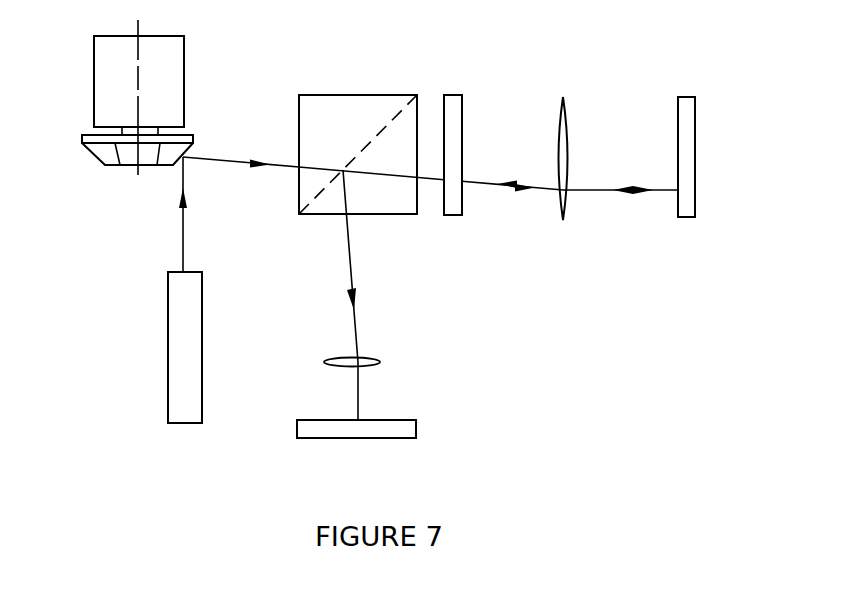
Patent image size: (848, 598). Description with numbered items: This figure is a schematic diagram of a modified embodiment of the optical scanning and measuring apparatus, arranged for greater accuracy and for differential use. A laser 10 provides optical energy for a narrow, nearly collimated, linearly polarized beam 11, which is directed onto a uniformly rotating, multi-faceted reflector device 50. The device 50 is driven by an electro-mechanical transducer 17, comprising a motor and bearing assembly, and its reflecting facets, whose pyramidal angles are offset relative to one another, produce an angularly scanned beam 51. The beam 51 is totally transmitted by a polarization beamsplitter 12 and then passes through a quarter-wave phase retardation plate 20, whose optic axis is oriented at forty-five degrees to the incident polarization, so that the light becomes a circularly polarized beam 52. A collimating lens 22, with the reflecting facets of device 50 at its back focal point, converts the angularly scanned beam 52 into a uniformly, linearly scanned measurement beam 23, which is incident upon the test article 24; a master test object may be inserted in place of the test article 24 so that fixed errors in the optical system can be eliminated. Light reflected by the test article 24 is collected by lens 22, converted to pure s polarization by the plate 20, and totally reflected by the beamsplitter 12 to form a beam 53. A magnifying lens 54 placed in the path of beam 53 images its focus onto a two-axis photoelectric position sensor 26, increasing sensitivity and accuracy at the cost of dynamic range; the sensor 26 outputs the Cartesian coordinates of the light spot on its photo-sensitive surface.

The electro-mechanical transducer 17 is at (94, 78).
The multi-faceted reflector device 50 is at (108, 165).
The laser 10 is at (204, 330).
The linearly polarized beam 11 is at (185, 225).
The angularly scanned beam 51 is at (228, 143).
The polarization beamsplitter 12 is at (340, 95).
The quarter-wave phase retardation plate 20 is at (445, 95).
The circularly polarized beam 52 is at (492, 185).
The collimating lens 22 is at (563, 97).
The measurement beam 23 is at (602, 190).
The test article 24 is at (678, 100).
The reflected beam 53 is at (351, 280).
The magnifying lens 54 is at (370, 358).
The two-axis photoelectric position sensor 26 is at (400, 420).